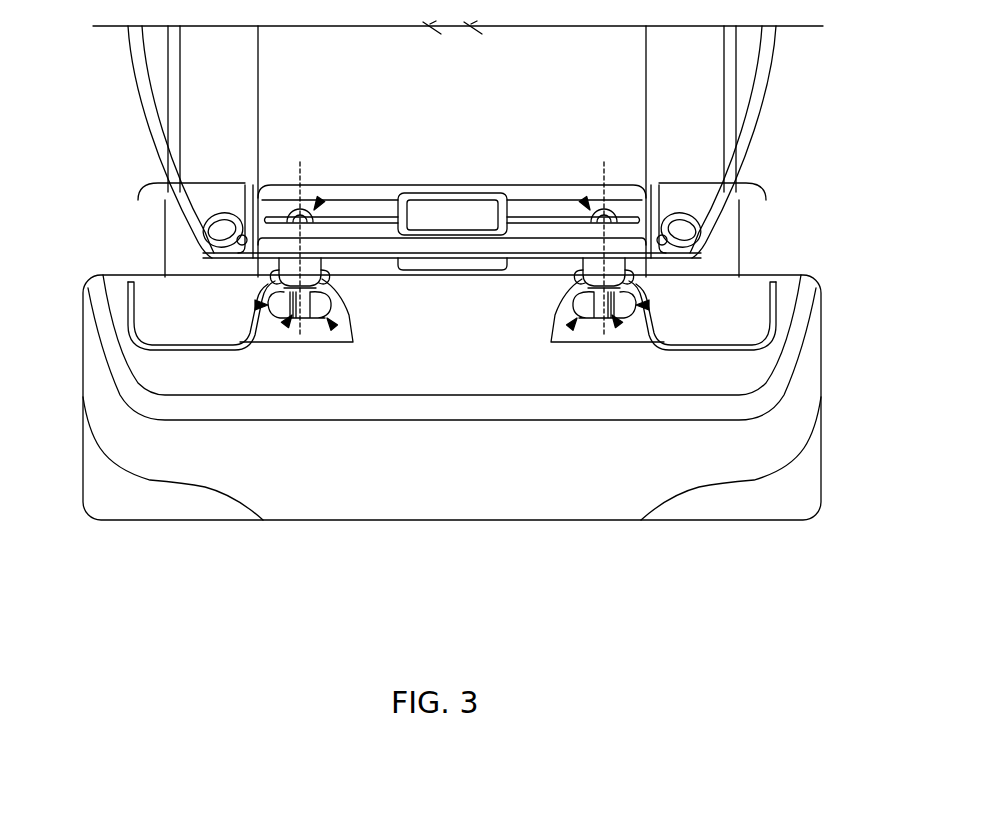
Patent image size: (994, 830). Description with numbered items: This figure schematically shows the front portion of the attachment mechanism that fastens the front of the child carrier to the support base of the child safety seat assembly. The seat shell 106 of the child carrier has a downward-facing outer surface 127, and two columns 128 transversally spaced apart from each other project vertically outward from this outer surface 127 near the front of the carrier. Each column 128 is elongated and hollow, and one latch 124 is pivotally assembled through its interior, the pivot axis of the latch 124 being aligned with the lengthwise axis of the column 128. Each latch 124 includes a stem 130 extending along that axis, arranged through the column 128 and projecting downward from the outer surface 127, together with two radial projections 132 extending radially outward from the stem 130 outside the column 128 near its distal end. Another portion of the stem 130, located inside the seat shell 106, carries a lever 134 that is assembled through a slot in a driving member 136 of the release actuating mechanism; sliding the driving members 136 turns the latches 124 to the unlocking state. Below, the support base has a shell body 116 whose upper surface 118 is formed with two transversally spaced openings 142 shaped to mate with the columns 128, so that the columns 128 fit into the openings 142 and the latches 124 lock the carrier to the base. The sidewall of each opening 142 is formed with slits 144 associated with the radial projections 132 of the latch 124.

The seat shell 106 is at (136, 75).
The shell body 116 is at (100, 293).
The upper surface 118 is at (804, 293).
The latch 124 is at (323, 198).
The outer surface 127 is at (382, 274).
The column 128 is at (268, 262).
The stem 130 is at (314, 322).
The radial projection 132 is at (258, 284).
The lever 134 is at (165, 232).
The driving member 136 is at (177, 183).
The opening 142 is at (284, 326).
The slit 144 is at (255, 305).